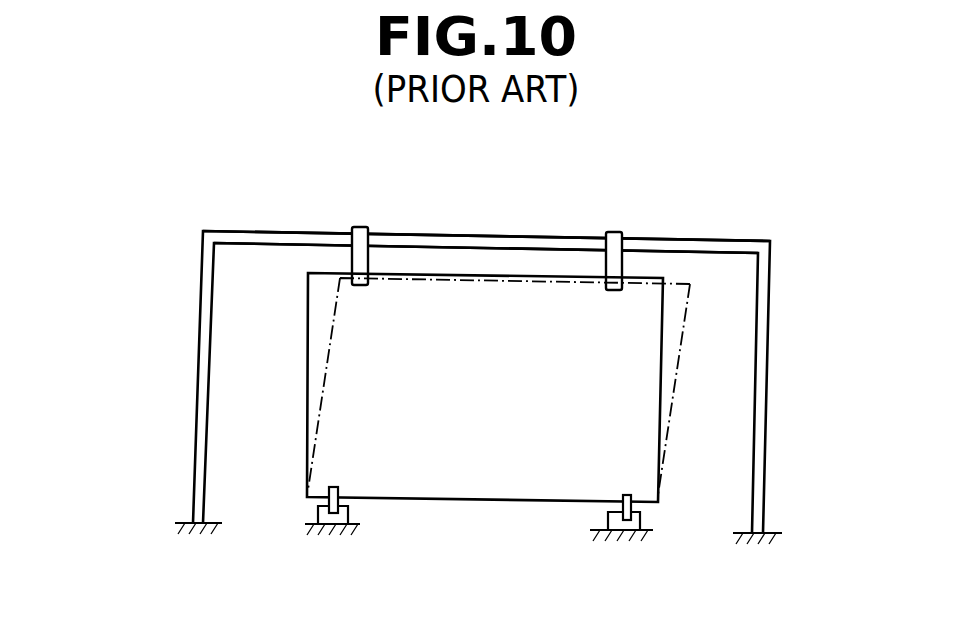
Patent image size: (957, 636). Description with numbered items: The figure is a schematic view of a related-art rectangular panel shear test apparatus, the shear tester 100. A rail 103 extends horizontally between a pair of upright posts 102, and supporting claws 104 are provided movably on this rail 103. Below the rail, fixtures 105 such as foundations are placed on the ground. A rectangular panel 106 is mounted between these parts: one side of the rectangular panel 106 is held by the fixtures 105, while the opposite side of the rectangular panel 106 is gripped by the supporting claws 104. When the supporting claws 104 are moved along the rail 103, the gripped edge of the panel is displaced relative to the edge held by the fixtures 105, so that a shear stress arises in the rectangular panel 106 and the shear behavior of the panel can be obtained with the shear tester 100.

The shear tester 100 is at (152, 311).
The posts 102 is at (197, 411).
The rail 103 is at (466, 242).
The supporting claws 104 is at (362, 226).
The fixtures 105 is at (348, 512).
The rectangular panel 106 is at (496, 450).